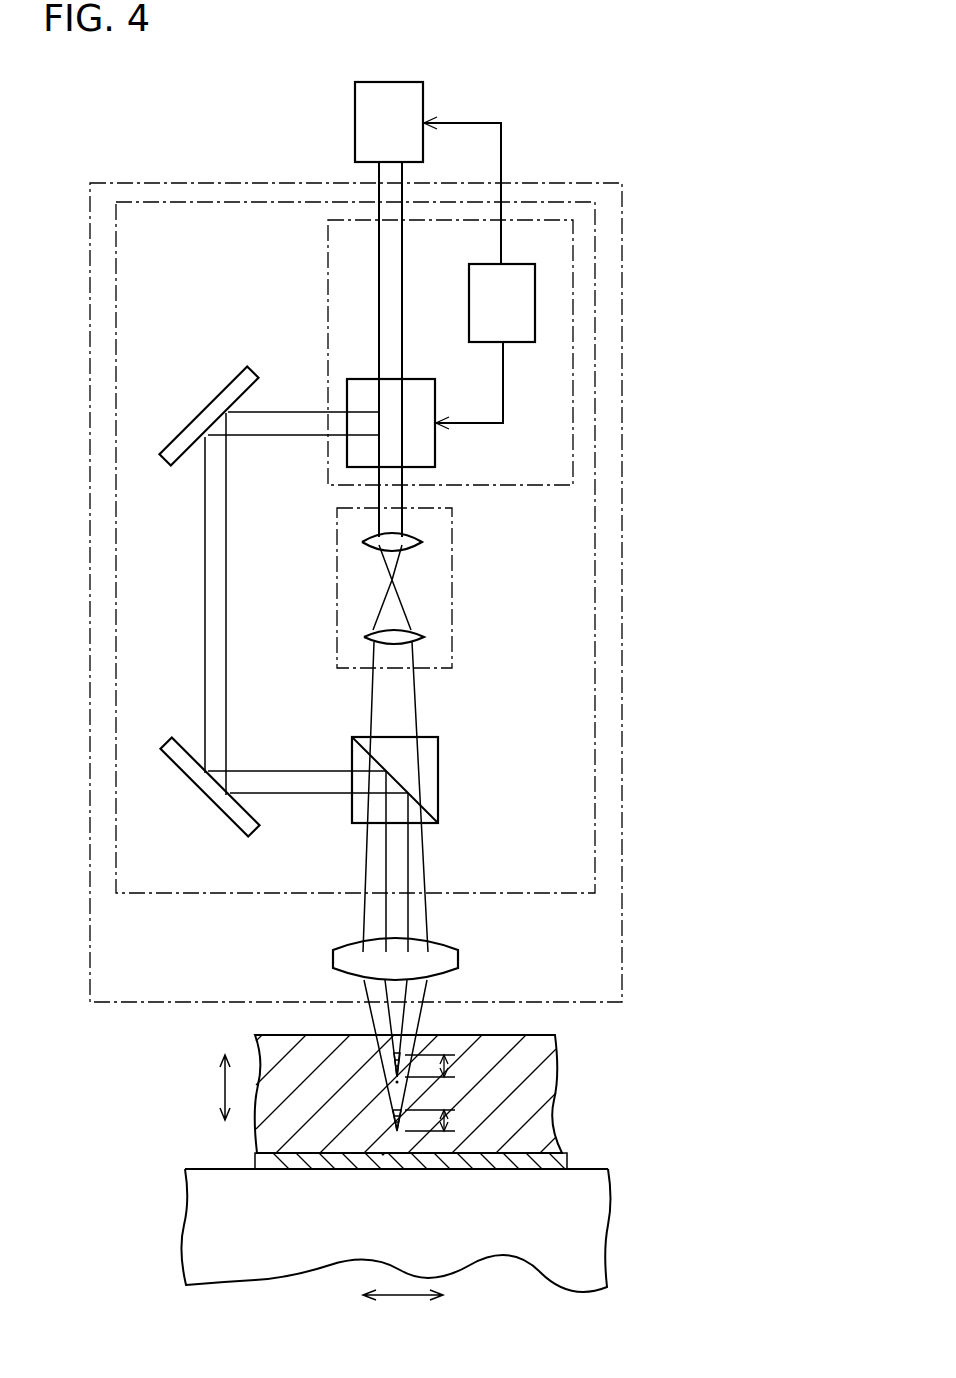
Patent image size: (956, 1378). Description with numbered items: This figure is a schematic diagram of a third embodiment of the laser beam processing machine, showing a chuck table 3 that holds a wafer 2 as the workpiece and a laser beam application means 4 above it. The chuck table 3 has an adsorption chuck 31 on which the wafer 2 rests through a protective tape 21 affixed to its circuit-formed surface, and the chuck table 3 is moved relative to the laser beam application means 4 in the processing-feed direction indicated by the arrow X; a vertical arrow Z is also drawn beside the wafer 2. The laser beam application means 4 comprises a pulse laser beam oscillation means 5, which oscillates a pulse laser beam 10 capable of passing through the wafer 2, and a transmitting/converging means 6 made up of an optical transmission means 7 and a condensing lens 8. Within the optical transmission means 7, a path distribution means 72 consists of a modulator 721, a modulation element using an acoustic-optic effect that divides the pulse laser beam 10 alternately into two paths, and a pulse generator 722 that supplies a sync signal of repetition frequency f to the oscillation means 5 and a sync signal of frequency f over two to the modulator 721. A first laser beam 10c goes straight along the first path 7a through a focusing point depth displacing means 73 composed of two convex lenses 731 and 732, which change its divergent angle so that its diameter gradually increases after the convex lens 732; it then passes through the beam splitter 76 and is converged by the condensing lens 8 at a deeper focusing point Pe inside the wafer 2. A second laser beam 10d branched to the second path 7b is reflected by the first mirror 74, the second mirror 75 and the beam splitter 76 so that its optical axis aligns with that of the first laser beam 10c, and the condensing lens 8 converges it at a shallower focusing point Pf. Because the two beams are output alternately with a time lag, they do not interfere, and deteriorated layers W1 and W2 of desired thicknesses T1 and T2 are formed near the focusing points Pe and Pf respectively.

The laser beam application means 4 is at (630, 93).
The pulse laser beam oscillation means 5 is at (355, 122).
The pulse laser beam 10 is at (379, 255).
The transmitting/converging means 6 is at (623, 388).
The optical transmission means 7 is at (597, 322).
The path distribution means 72 is at (575, 255).
The pulse generator 722 is at (469, 290).
The modulator 721 is at (420, 379).
The second path 7b is at (310, 400).
The first mirror 74 is at (203, 405).
The second laser beam 10d is at (263, 437).
The first laser beam 10c is at (379, 493).
The first path 7a is at (410, 497).
The focusing point depth displacing means 73 is at (453, 580).
The convex lens 731 is at (418, 537).
The convex lens 732 is at (415, 633).
The second mirror 75 is at (207, 797).
The beam splitter 76 is at (438, 757).
The condensing lens 8 is at (445, 945).
The wafer 2 is at (562, 1065).
The deteriorated layer W2 is at (395, 1066).
The focusing point Pf is at (392, 1083).
The deteriorated layer W1 is at (393, 1118).
The thickness T2 is at (448, 1069).
The thickness T1 is at (448, 1122).
The protective tape 21 is at (255, 1160).
The focusing point Pe is at (383, 1156).
The adsorption chuck 31 is at (575, 1168).
The chuck table 3 is at (183, 1218).
The Z axis Z is at (215, 1087).
The processing-feed direction arrow X is at (403, 1308).